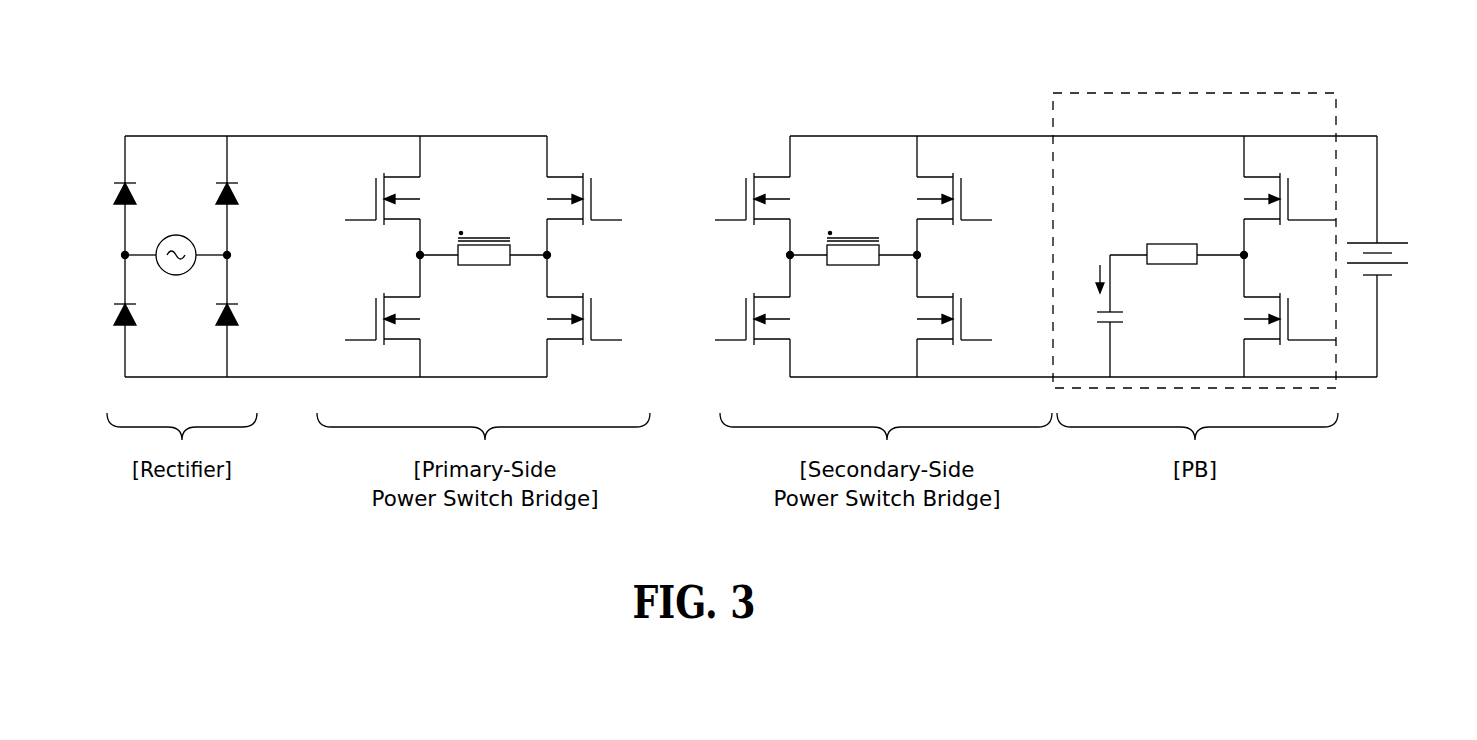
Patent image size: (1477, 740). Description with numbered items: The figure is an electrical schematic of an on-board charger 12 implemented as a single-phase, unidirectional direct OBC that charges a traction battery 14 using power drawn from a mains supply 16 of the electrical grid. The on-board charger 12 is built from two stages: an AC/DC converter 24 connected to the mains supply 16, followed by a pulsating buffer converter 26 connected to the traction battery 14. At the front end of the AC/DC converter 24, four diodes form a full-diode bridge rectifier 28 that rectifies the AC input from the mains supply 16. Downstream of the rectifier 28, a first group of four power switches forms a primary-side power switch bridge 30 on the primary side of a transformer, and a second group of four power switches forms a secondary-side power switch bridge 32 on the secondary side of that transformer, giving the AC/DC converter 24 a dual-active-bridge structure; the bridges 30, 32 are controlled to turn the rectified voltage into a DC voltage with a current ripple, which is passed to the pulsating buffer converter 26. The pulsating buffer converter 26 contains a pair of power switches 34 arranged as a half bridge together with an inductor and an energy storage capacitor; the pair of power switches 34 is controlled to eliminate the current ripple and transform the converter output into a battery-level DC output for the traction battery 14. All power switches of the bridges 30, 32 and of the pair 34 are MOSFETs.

The on-board charger 12 is at (1280, 48).
The traction battery 14 is at (1405, 236).
The mains supply 16 is at (176, 275).
The AC/DC converter 24 is at (500, 130).
The pulsating buffer converter 26 is at (1300, 128).
The full-diode bridge rectifier 28 is at (167, 170).
The primary-side power switch bridge 30 is at (472, 170).
The secondary-side power switch bridge 32 is at (842, 170).
The pair of power switches 34 is at (1300, 258).